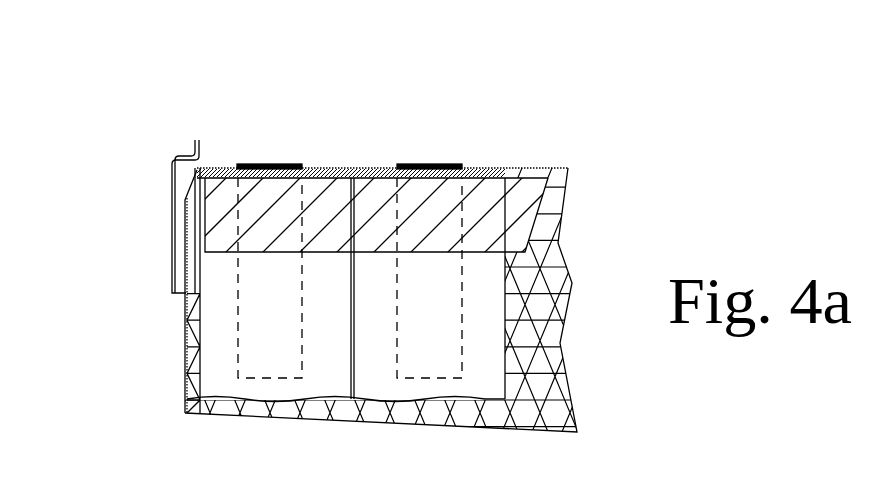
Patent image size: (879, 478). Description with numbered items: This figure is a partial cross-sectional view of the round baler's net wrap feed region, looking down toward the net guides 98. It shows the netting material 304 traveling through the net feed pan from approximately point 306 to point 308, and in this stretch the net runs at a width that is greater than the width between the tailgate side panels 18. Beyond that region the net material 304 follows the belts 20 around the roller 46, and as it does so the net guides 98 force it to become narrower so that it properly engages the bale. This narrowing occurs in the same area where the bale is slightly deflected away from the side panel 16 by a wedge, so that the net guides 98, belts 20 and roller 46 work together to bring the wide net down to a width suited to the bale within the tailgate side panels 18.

The side panel 16 is at (197, 142).
The tailgate side panels 18 is at (172, 158).
The belts 20 is at (328, 170).
The roller 46 is at (224, 202).
The net guides 98 is at (275, 164).
The netting material 304 is at (184, 337).
The point 306 is at (174, 268).
The point 308 is at (185, 172).